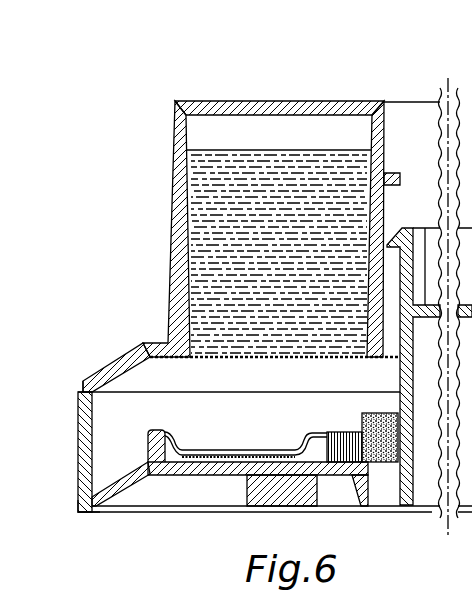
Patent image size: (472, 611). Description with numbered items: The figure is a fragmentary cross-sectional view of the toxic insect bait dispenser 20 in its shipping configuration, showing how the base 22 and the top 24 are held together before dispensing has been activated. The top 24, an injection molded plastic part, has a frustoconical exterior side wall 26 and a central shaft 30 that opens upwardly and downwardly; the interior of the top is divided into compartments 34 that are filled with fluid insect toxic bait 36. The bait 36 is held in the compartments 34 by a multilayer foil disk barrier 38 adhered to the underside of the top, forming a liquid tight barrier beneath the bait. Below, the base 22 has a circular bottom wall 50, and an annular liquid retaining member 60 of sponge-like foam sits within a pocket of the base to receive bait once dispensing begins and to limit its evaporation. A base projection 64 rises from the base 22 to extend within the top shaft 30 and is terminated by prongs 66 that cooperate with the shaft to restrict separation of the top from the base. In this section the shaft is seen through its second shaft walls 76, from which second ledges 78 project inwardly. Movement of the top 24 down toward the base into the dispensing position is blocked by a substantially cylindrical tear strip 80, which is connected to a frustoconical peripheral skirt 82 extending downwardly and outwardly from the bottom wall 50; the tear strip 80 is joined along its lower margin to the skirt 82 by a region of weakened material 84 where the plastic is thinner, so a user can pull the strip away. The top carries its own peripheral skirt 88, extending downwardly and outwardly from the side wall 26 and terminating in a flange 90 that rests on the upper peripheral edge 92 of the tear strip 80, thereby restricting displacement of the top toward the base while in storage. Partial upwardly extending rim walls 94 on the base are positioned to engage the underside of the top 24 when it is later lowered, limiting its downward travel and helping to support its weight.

The toxic insect bait dispenser 20 is at (132, 84).
The base 22 is at (130, 513).
The top 24 is at (172, 215).
The frustoconical exterior side wall 26 is at (170, 298).
The central shaft 30 is at (386, 126).
The compartments 34 is at (262, 117).
The insect toxic bait 36 is at (312, 149).
The foil disk barrier 38 is at (208, 359).
The circular bottom wall 50 is at (205, 476).
The annular liquid retaining member 60 is at (380, 437).
The base projection 64 is at (414, 487).
The prongs 66 is at (406, 228).
The second shaft walls 76 is at (386, 103).
The second ledges 78 is at (368, 232).
The tear strip 80 is at (78, 445).
The peripheral skirt 82 is at (127, 476).
The region of weakened material 84 is at (92, 512).
The peripheral skirt 88 is at (130, 353).
The flange 90 is at (85, 381).
The upper peripheral edge 92 is at (83, 387).
The rim walls 94 is at (300, 446).